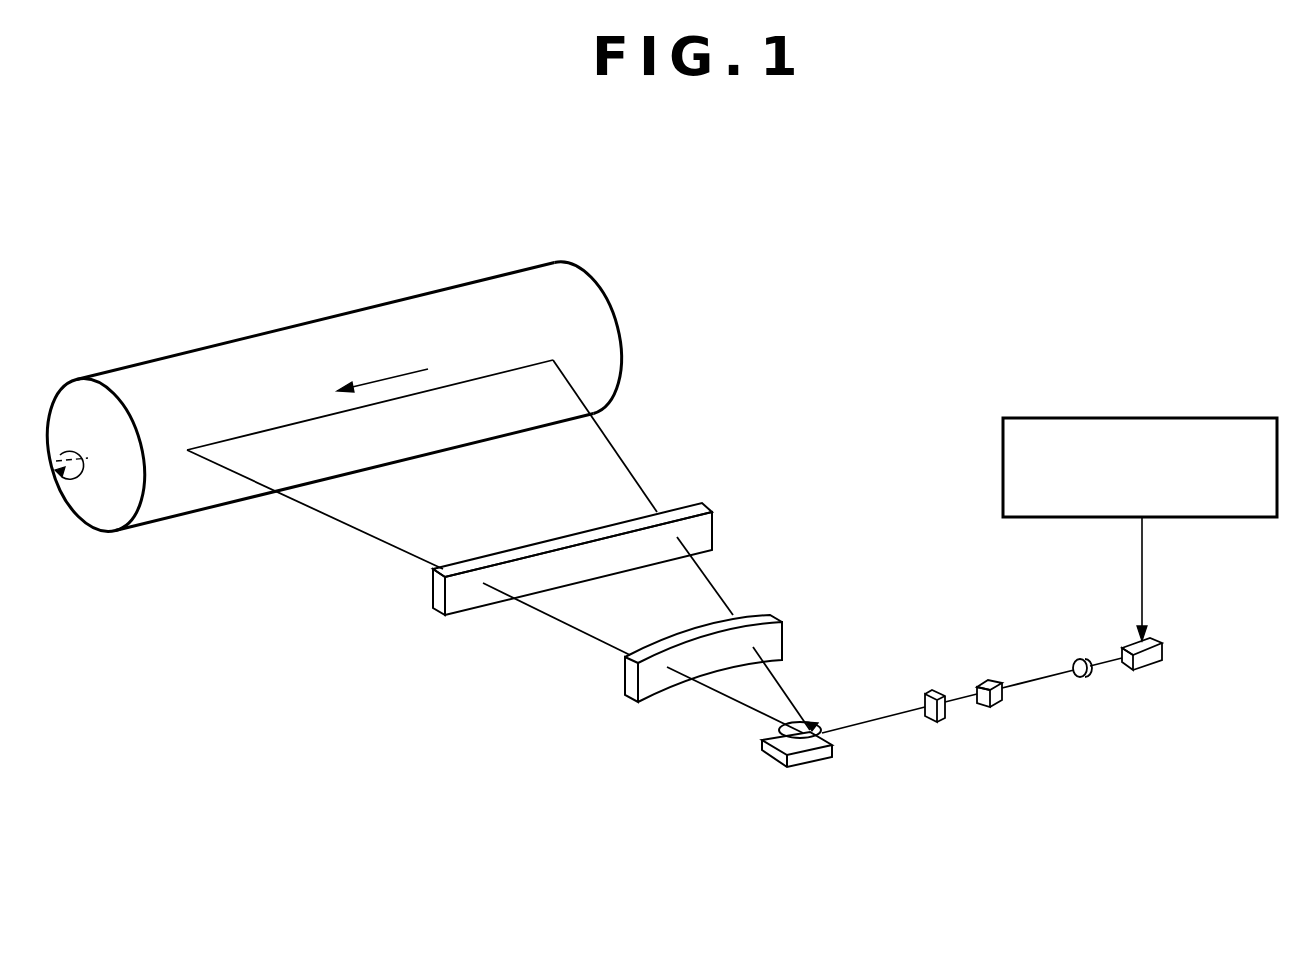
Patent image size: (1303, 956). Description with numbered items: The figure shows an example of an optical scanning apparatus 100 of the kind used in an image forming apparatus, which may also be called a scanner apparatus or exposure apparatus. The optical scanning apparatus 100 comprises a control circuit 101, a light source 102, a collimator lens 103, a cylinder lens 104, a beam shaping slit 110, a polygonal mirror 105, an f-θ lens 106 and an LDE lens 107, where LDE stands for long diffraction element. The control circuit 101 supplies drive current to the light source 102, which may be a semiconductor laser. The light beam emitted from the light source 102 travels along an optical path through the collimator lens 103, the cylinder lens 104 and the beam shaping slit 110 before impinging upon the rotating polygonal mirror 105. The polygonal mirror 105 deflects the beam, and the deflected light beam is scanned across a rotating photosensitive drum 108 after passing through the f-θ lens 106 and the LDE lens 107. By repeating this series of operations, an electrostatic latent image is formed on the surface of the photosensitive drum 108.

The optical scanning apparatus 100 is at (1086, 247).
The control circuit 101 is at (1193, 418).
The light source 102 is at (1125, 645).
The collimator lens 103 is at (1082, 678).
The cylinder lens 104 is at (980, 683).
The polygonal mirror 105 is at (773, 763).
The f-θ lens 106 is at (633, 700).
The LDE lens 107 is at (440, 613).
The photosensitive drum 108 is at (78, 530).
The beam shaping slit 110 is at (938, 722).